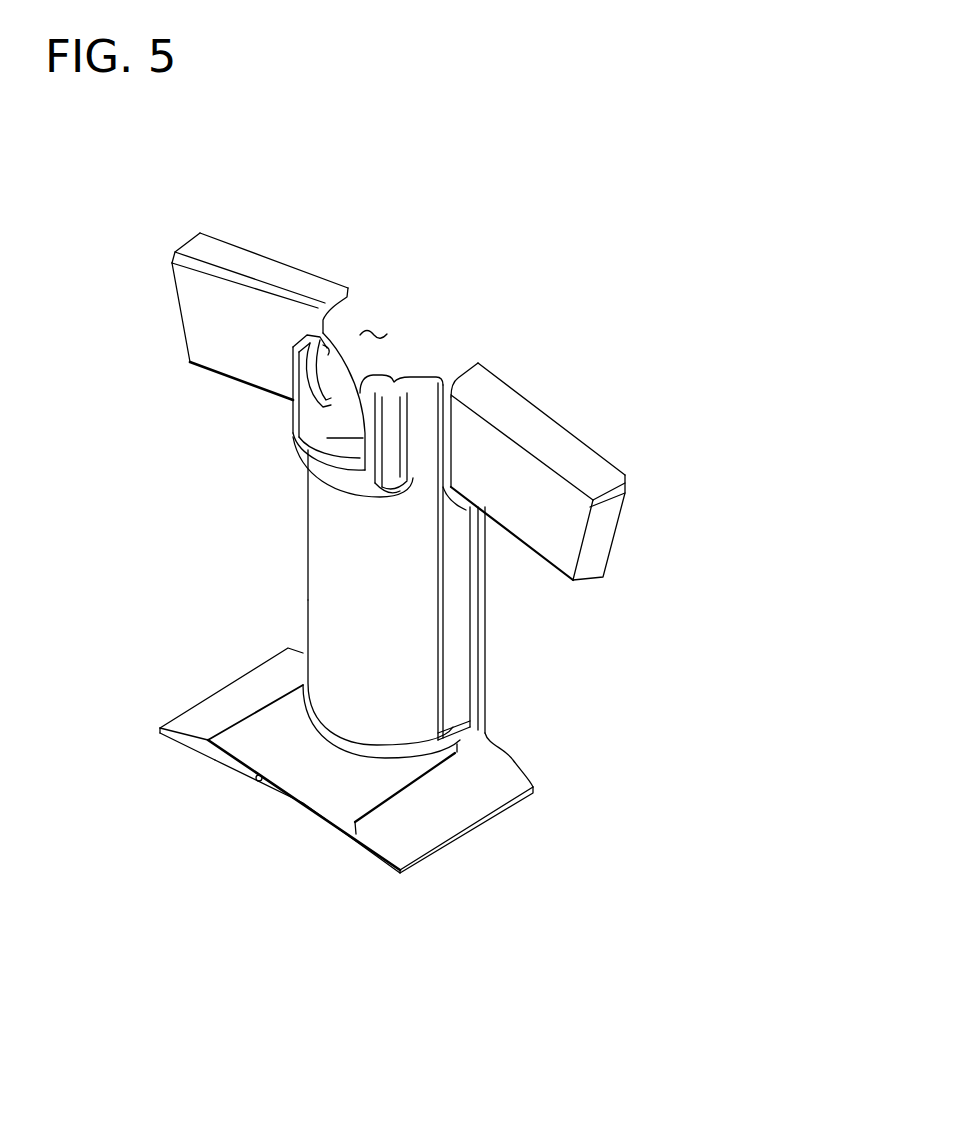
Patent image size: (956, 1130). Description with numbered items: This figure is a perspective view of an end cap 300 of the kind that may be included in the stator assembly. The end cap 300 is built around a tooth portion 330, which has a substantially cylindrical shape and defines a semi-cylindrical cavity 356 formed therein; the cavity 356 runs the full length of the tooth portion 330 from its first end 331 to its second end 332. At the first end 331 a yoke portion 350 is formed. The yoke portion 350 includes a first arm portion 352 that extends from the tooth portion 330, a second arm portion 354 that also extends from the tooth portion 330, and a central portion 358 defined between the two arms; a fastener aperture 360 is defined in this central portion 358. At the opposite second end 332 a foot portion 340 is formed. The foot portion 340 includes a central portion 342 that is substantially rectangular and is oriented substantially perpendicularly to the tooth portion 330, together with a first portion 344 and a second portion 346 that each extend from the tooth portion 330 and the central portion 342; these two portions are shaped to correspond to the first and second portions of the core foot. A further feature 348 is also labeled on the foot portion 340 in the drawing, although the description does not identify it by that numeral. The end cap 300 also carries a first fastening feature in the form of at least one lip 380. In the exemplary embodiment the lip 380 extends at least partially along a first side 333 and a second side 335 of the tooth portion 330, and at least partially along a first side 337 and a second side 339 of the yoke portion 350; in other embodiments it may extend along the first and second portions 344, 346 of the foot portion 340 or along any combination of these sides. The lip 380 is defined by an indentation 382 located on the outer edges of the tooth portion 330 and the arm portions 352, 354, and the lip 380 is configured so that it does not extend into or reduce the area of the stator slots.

The end cap 300 is at (540, 169).
The yoke portion 350 is at (300, 249).
The first end 331 is at (350, 282).
The semi-cylindrical cavity 356 is at (378, 322).
The central portion 358 is at (392, 374).
The first arm portion 352 is at (207, 333).
The first side 337 is at (217, 377).
The fastener aperture 360 is at (305, 448).
The first side 333 is at (303, 500).
The tooth portion 330 is at (299, 570).
The second arm portion 354 is at (561, 553).
The lip 380 is at (593, 570).
The second side 339 is at (540, 569).
The second side 335 is at (497, 636).
The indentation 382 is at (455, 700).
The second end 332 is at (532, 772).
The foot portion 340 is at (312, 832).
The first portion 344 is at (203, 750).
The plate lip 348 is at (280, 788).
The central portion 342 is at (312, 780).
The second portion 346 is at (360, 840).